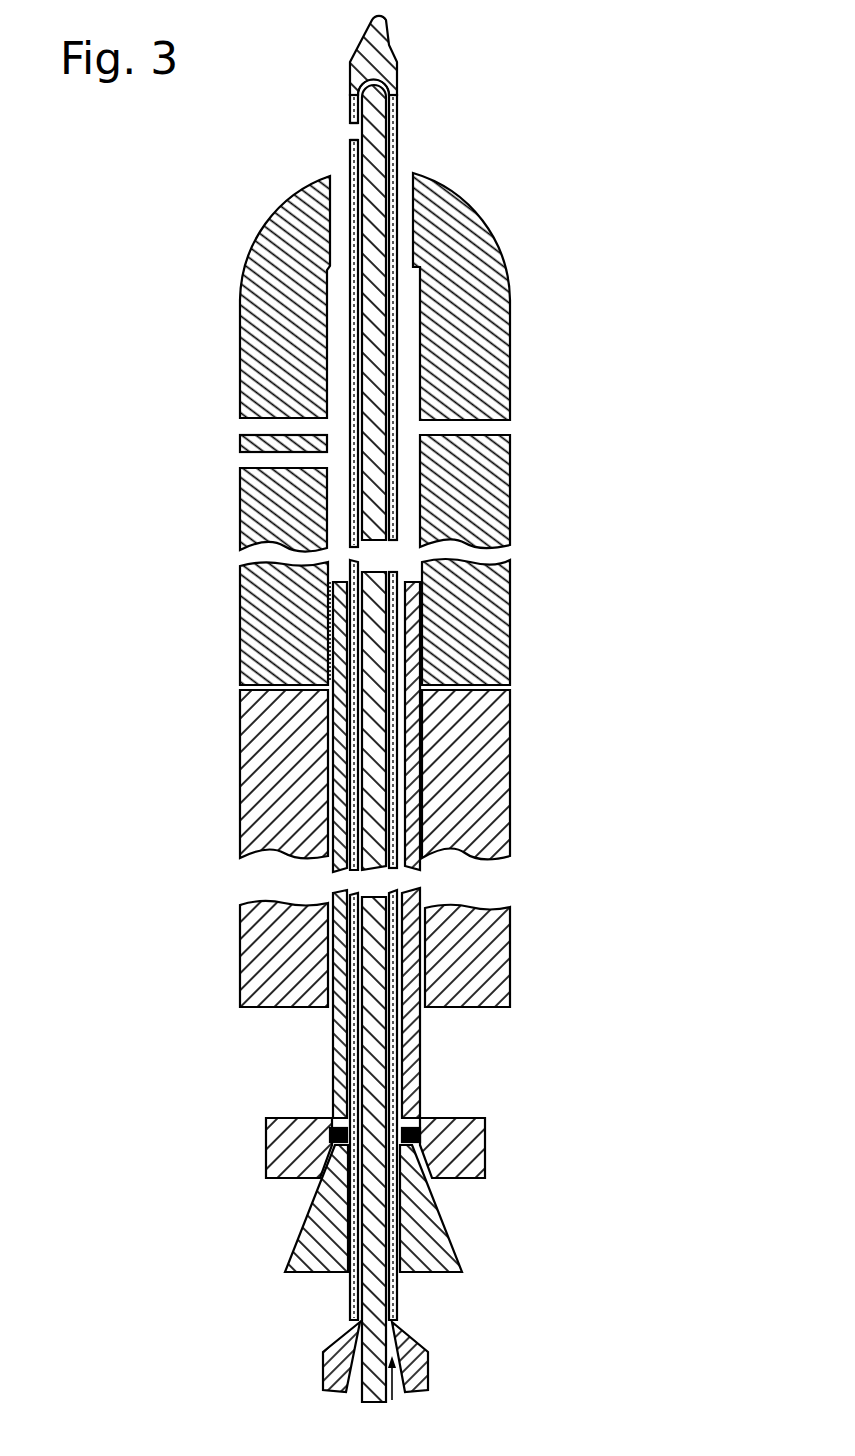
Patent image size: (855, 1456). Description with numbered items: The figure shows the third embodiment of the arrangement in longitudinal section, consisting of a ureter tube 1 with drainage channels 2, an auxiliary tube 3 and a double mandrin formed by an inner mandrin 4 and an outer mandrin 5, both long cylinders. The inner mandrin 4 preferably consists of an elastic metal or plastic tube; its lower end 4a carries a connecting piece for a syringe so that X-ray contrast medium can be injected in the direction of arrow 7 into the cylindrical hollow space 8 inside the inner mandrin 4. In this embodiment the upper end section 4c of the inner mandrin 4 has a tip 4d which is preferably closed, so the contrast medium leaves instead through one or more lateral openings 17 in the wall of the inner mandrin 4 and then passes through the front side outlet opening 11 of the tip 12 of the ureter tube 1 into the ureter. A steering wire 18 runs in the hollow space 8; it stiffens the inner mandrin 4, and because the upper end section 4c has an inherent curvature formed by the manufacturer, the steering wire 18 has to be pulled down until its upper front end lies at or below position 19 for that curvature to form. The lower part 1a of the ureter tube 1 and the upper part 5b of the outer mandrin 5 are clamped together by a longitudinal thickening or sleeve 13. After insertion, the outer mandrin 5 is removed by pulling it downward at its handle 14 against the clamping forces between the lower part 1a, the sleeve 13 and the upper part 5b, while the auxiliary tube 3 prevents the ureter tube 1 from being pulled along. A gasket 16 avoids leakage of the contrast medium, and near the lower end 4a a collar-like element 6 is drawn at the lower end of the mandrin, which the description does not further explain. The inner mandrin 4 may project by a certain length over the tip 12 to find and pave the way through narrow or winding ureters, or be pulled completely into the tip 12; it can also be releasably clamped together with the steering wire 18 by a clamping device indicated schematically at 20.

The ureter tube 1 is at (240, 370).
The lower part of the ureter tube 1a is at (282, 667).
The drainage channels 2 is at (250, 425).
The auxiliary tube 3 is at (250, 700).
The inner mandrin 4 is at (400, 352).
The lower end of the inner mandrin 4a is at (398, 1290).
The upper end section of the inner mandrin 4c is at (352, 95).
The tip of the inner mandrin 4d is at (386, 14).
The outer mandrin 5 is at (420, 1057).
The upper part of the outer mandrin 5b is at (412, 583).
The stop collar 6 is at (427, 1363).
The arrow 7 is at (395, 1392).
The cylindrical hollow space 8 is at (350, 1080).
The front side outlet opening 11 is at (282, 170).
The tip of the ureter tube 12 is at (268, 207).
The sleeve 13 is at (330, 640).
The handle 14 is at (265, 1145).
The gasket 16 is at (410, 1138).
The lateral openings 17 is at (352, 130).
The steering wire 18 is at (385, 497).
The position 19 is at (396, 172).
The releasable clamping device 20 is at (300, 1222).